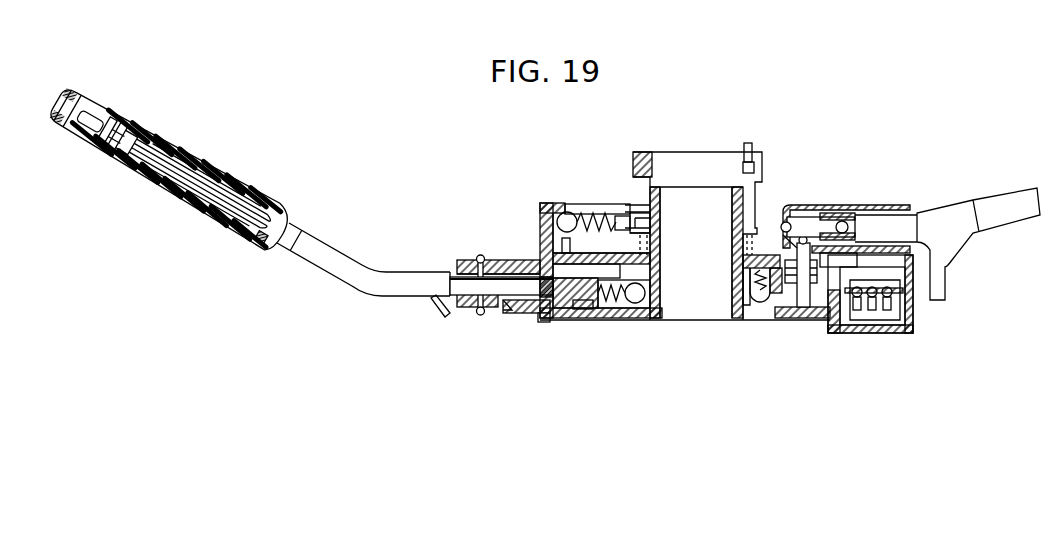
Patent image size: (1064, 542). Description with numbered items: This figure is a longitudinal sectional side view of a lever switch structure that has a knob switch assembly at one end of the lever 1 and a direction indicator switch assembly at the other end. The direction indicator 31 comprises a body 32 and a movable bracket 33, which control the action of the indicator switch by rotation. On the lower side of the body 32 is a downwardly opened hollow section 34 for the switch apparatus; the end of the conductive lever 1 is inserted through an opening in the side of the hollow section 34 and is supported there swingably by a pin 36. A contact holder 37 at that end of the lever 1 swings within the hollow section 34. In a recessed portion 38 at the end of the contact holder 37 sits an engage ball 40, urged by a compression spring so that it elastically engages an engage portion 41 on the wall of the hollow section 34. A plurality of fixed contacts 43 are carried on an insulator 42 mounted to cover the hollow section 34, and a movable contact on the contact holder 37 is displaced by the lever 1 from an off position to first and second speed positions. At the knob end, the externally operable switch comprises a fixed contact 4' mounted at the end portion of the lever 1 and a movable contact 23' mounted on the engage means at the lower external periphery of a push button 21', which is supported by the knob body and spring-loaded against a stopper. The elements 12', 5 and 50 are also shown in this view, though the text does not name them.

The push button 21' is at (162, 151).
The movable contact 23' is at (107, 106).
The fixed contact 4' is at (150, 121).
The inner rods 12' is at (203, 180).
The pin 5 is at (265, 247).
The lever 1 is at (358, 282).
The body 32 is at (497, 260).
The pin 36 is at (462, 283).
The fixed contacts 43 is at (583, 317).
The insulator 42 is at (508, 312).
The stop tab 50 is at (540, 322).
The contact holder 37 is at (567, 317).
The hollow section 34 is at (612, 250).
The recessed portion 38 is at (617, 317).
The engage portion 41 is at (638, 310).
The engage ball 40 is at (662, 300).
The direction indicator 31 is at (806, 180).
The movable bracket 33 is at (875, 247).